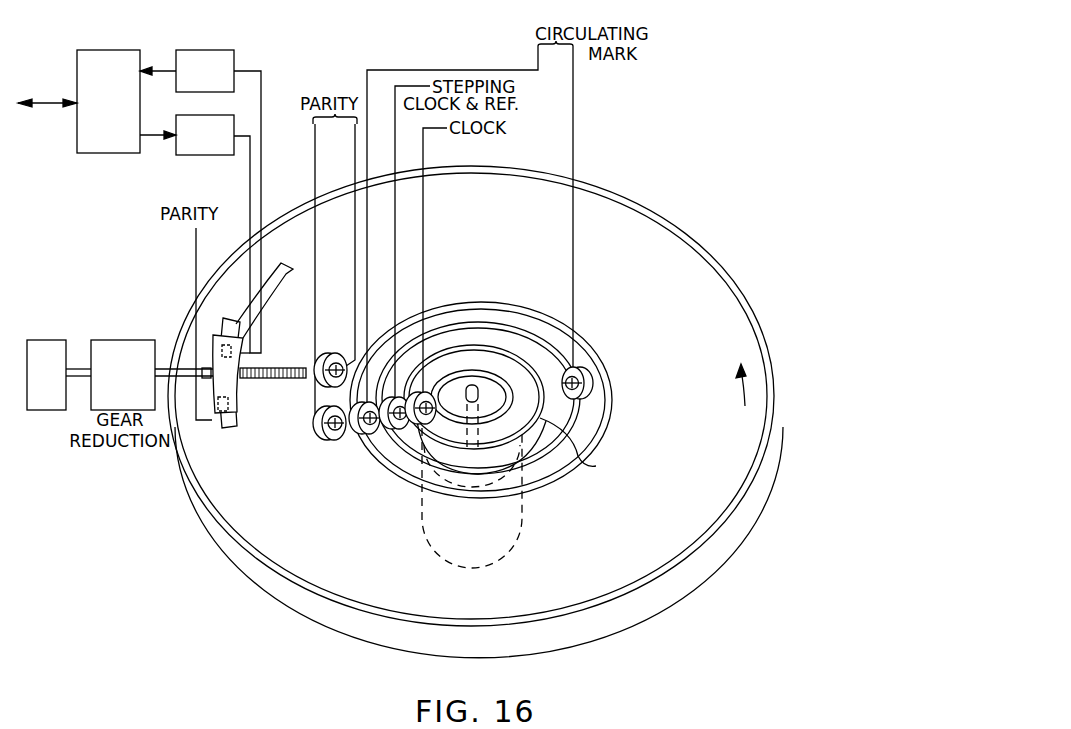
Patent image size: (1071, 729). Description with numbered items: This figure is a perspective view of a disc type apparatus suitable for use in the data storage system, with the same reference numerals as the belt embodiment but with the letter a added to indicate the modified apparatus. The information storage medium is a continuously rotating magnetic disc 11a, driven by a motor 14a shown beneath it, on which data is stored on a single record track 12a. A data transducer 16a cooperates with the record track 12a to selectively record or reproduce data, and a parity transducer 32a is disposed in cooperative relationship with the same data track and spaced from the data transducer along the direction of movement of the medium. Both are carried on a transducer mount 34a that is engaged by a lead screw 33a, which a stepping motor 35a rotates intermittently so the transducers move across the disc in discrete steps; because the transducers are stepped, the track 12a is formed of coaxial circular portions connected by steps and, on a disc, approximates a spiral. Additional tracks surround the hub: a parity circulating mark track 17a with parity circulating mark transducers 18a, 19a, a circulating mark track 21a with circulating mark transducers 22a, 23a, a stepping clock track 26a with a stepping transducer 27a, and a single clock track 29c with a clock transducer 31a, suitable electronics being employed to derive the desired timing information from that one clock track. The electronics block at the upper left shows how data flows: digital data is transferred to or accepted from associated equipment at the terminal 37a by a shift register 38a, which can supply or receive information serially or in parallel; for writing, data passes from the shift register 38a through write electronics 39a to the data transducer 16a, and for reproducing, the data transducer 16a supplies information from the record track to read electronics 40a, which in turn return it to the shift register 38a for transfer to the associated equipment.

The magnetic disc 11a is at (665, 562).
The record track 12a is at (297, 273).
The motor 14a is at (522, 527).
The data transducer 16a is at (231, 331).
The parity circulating mark track 17a is at (463, 303).
The parity circulating mark transducer 18a is at (322, 438).
The parity circulating mark transducer 19a is at (330, 354).
The circulating mark track 21a is at (501, 322).
The circulating mark transducer 22a is at (362, 436).
The circulating mark transducer 23a is at (594, 396).
The stepping clock track 26a is at (538, 478).
The stepping transducer 27a is at (392, 431).
The clock track 29c is at (582, 457).
The clock transducer 31a is at (418, 426).
The parity transducer 32a is at (222, 430).
The lead screw 33a is at (168, 352).
The transducer mount 34a is at (241, 404).
The stepping motor 35a is at (48, 340).
The terminal 37a is at (62, 78).
The shift register 38a is at (86, 50).
The write electronics 39a is at (200, 115).
The read electronics 40a is at (200, 50).